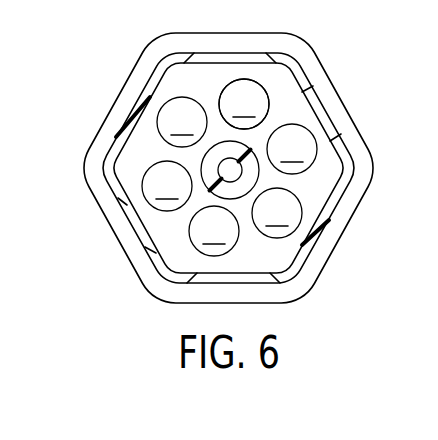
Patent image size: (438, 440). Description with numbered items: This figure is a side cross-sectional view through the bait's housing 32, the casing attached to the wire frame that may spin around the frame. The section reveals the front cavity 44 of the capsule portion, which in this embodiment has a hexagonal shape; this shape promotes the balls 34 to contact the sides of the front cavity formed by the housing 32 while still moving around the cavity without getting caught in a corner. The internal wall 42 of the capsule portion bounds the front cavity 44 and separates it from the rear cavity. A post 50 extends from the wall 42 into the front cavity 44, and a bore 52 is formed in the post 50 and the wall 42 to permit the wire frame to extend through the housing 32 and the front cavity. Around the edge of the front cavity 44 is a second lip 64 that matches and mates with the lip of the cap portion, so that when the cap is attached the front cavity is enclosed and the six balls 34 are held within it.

The housing 32 is at (318, 266).
The ball 34 is at (229, 167).
The internal wall 42 is at (275, 116).
The front cavity 44 is at (204, 86).
The post 50 is at (242, 171).
The bore 52 is at (229, 178).
The second lip 64 is at (347, 158).